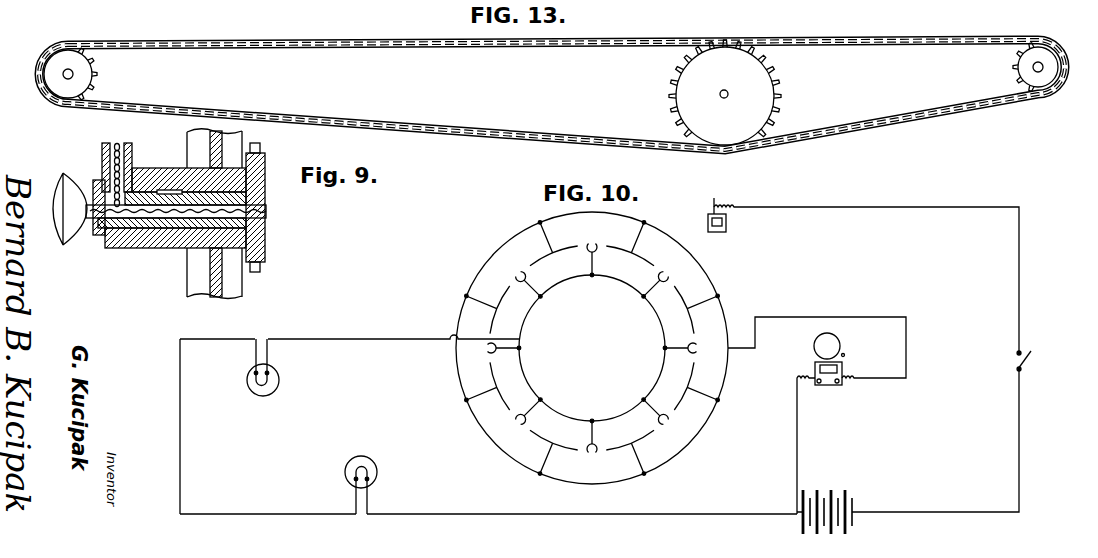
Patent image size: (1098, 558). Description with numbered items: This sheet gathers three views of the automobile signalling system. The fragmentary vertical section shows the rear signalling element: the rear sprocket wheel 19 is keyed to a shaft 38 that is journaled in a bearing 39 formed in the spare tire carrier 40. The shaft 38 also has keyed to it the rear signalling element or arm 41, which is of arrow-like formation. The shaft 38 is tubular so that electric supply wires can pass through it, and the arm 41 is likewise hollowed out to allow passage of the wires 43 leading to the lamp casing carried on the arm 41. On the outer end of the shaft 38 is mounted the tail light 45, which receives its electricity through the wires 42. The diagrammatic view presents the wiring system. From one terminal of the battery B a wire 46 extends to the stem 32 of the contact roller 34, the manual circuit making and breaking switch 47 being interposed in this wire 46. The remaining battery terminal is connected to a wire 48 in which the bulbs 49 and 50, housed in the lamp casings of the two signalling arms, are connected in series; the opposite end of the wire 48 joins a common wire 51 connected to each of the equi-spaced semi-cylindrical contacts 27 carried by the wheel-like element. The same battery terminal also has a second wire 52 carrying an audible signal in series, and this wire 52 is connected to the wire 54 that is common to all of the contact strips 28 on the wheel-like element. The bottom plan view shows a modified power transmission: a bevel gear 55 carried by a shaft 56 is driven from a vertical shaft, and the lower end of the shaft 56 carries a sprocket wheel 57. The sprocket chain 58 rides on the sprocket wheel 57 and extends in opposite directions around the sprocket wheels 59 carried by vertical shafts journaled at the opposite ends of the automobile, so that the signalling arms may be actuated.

In FIG. 13, the sprocket chain 58 is at (561, 47).
In FIG. 13, the sprocket wheels 59 is at (82, 79).
In FIG. 13, the sprocket wheel 57 is at (771, 101).
In FIG. 13, the shaft 56 is at (719, 94).
In FIG. 9, the spare tire carrier 40 is at (187, 290).
In FIG. 9, the rear sprocket wheel 19 is at (265, 165).
In FIG. 9, the shaft 38 is at (265, 236).
In FIG. 9, the bearing 39 is at (176, 248).
In FIG. 9, the wires 42 is at (268, 211).
In FIG. 9, the tail light 45 is at (69, 185).
In FIG. 9, the rear signalling element or arm 41 is at (126, 166).
In FIG. 9, the wires 43 is at (117, 143).
In FIG. 10, the wire 54 is at (713, 289).
In FIG. 10, the common wire 51 is at (563, 414).
In FIG. 10, the semi-cylindrical contacts 27 is at (592, 350).
In FIG. 10, the contact strips 28 is at (698, 372).
In FIG. 10, the wire 48 is at (346, 338).
In FIG. 10, the bulb 50 is at (268, 395).
In FIG. 10, the bulb 49 is at (360, 456).
In FIG. 10, the stem 32 is at (719, 194).
In FIG. 10, the contact roller 34 is at (714, 232).
In FIG. 10, the wire 46 is at (855, 207).
In FIG. 10, the manual circuit making and breaking switch 47 is at (1015, 364).
In FIG. 10, the second wire 52 is at (828, 317).
In FIG. 10, the bevel gear 55 is at (815, 363).
In FIG. 10, the battery B is at (827, 500).